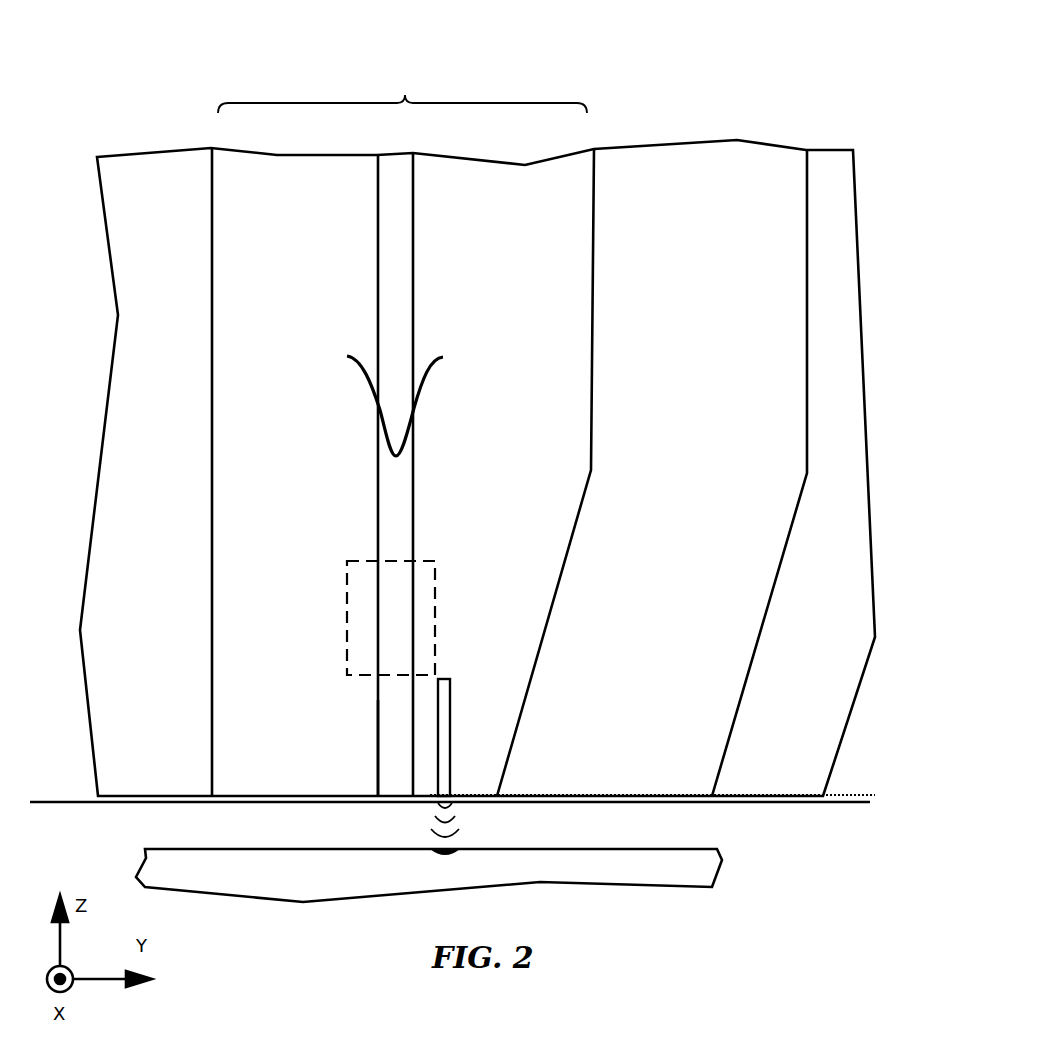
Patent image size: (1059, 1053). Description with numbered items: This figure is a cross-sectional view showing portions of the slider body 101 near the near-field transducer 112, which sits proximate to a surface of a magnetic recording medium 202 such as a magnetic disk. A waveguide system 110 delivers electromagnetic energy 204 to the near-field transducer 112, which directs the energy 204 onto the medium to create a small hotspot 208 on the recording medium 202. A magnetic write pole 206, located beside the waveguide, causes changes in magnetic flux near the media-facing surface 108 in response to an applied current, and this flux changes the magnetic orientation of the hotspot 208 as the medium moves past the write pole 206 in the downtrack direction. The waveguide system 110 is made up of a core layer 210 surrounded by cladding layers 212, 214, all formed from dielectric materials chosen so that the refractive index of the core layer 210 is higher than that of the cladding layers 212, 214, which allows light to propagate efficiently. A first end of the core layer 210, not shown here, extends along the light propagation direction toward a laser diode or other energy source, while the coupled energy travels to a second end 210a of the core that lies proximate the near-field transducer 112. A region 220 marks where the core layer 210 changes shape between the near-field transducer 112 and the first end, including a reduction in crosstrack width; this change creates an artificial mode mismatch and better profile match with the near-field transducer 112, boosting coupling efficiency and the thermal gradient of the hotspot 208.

The slider body 101 is at (741, 64).
The media-facing surface 108 is at (767, 803).
The waveguide system 110 is at (402, 87).
The near-field transducer 112 is at (441, 793).
The magnetic recording medium 202 is at (202, 873).
The electromagnetic energy 204 is at (366, 367).
The magnetic write pole 206 is at (715, 140).
The hotspot 208 is at (445, 854).
The core layer 210 is at (400, 152).
The second end of the core 210a is at (380, 740).
The cladding layer 212 is at (447, 170).
The cladding layer 214 is at (237, 150).
The region 220 is at (347, 642).